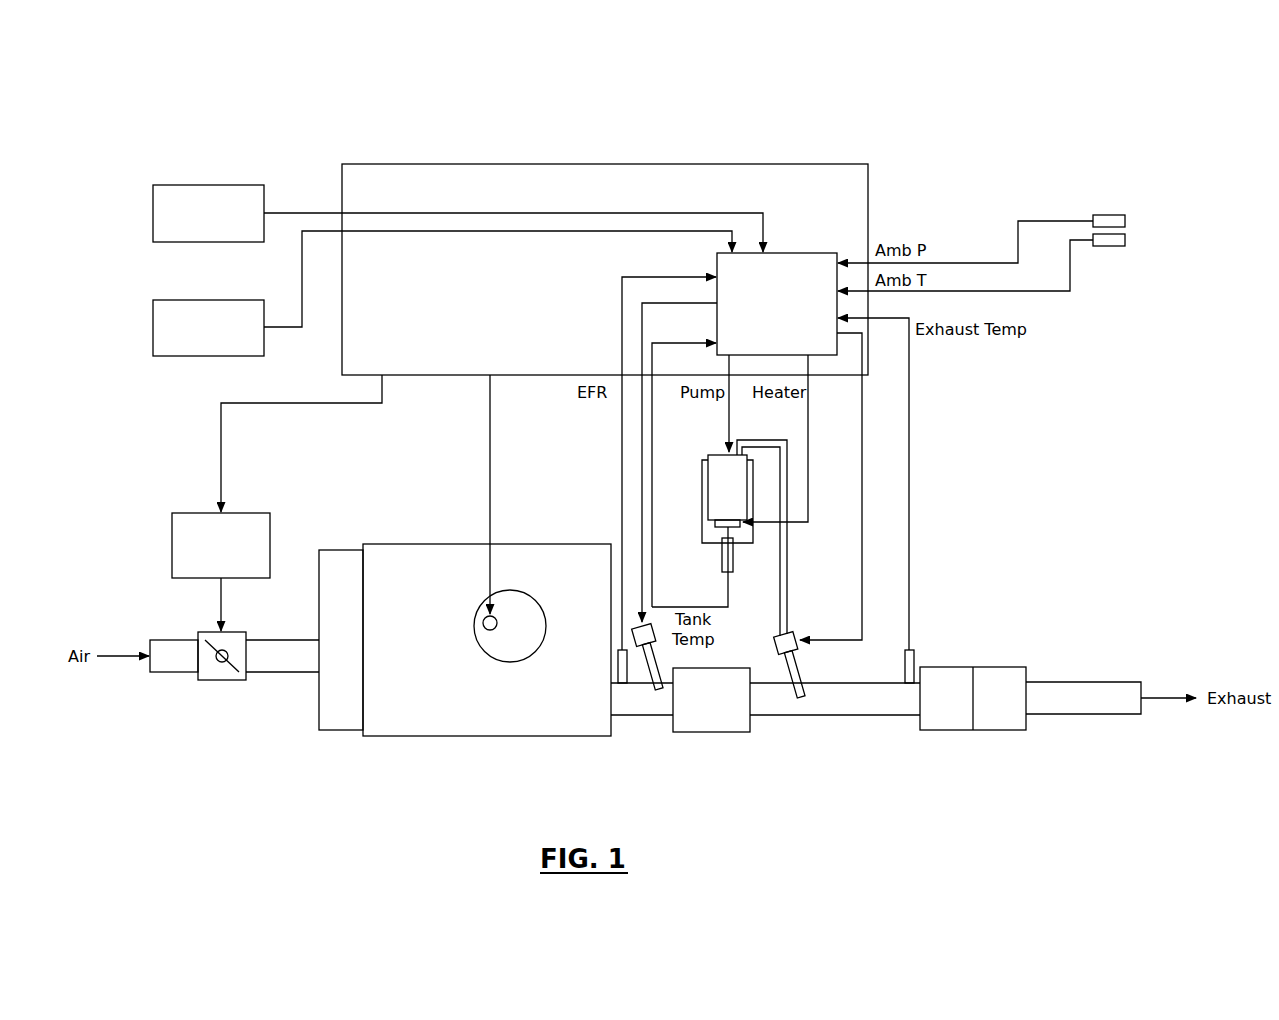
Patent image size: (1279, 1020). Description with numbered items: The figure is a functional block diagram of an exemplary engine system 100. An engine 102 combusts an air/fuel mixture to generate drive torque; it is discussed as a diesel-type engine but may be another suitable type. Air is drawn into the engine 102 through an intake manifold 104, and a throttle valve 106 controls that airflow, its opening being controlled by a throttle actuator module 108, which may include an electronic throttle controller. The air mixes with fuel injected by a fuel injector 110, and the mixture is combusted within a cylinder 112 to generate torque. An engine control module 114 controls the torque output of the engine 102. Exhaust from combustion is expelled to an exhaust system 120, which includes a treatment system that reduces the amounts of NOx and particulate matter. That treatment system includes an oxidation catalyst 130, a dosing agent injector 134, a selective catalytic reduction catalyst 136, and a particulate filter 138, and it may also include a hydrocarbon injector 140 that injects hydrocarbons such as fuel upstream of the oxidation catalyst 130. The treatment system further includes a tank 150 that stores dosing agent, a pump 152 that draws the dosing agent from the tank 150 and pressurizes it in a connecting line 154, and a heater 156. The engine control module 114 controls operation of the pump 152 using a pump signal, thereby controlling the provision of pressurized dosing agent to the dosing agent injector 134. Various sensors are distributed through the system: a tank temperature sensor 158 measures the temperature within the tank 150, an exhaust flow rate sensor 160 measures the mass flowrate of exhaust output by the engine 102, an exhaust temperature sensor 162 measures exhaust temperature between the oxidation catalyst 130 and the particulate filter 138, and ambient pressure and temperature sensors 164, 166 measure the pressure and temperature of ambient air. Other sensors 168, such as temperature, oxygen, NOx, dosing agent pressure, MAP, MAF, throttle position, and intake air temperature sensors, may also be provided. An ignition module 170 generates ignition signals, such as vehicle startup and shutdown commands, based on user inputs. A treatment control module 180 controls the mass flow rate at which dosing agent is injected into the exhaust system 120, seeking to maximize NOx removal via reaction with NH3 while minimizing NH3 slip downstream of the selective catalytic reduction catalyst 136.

The engine system 100 is at (158, 47).
The engine 102 is at (418, 544).
The intake manifold 104 is at (340, 550).
The throttle valve 106 is at (222, 680).
The throttle actuator module 108 is at (183, 513).
The fuel injector 110 is at (484, 618).
The cylinder 112 is at (510, 662).
The engine control module 114 is at (600, 164).
The exhaust system 120 is at (992, 824).
The oxidation catalyst 130 is at (710, 733).
The dosing agent injector 134 is at (788, 668).
The selective catalytic reduction catalyst 136 is at (955, 730).
The particulate filter 138 is at (1000, 730).
The hydrocarbon injector 140 is at (652, 690).
The tank 150 is at (697, 543).
The pump 152 is at (715, 455).
The connecting line 154 is at (787, 568).
The heater 156 is at (712, 520).
The tank temperature sensor 158 is at (722, 560).
The exhaust flow rate sensor 160 is at (621, 690).
The exhaust temperature sensor 162 is at (909, 683).
The ambient pressure sensor 164 is at (1110, 215).
The ambient temperature sensor 166 is at (1125, 234).
The other sensors 168 is at (210, 185).
The ignition module 170 is at (210, 300).
The treatment control module 180 is at (775, 253).